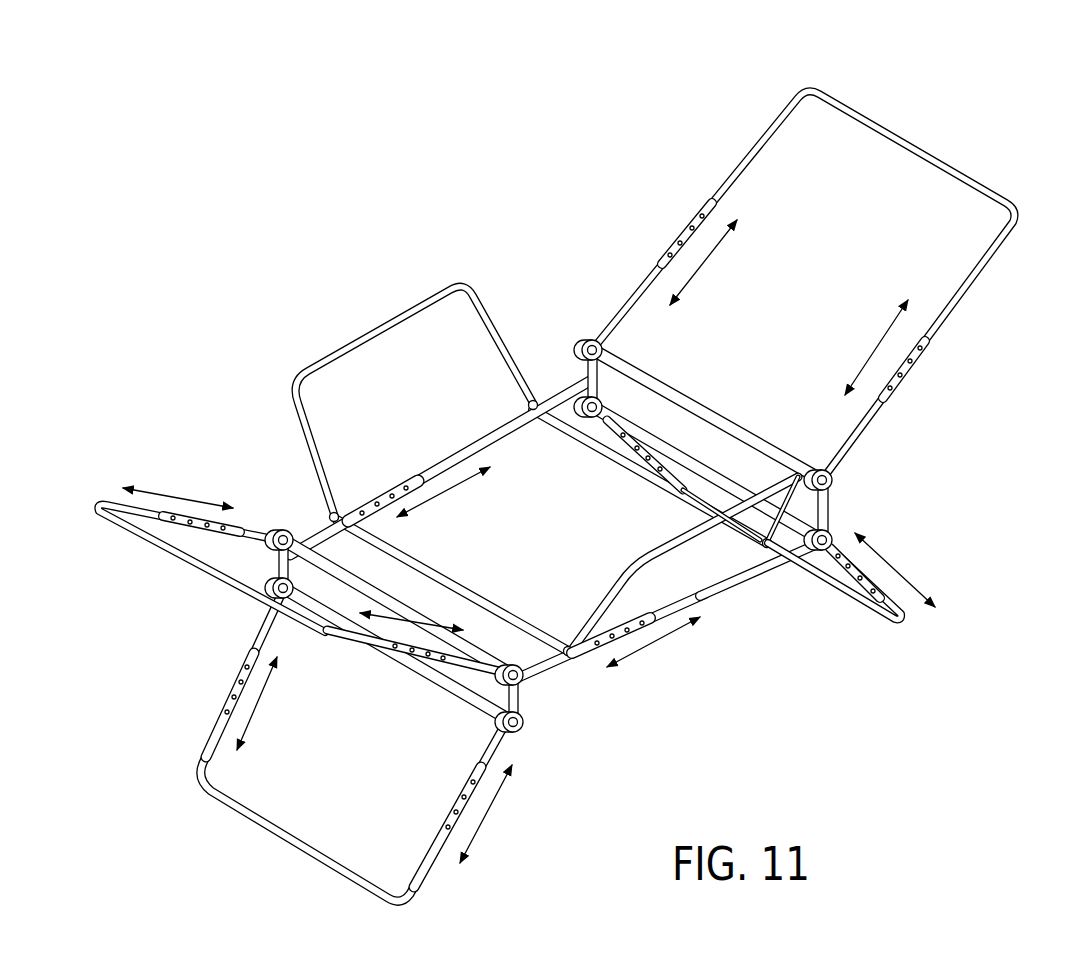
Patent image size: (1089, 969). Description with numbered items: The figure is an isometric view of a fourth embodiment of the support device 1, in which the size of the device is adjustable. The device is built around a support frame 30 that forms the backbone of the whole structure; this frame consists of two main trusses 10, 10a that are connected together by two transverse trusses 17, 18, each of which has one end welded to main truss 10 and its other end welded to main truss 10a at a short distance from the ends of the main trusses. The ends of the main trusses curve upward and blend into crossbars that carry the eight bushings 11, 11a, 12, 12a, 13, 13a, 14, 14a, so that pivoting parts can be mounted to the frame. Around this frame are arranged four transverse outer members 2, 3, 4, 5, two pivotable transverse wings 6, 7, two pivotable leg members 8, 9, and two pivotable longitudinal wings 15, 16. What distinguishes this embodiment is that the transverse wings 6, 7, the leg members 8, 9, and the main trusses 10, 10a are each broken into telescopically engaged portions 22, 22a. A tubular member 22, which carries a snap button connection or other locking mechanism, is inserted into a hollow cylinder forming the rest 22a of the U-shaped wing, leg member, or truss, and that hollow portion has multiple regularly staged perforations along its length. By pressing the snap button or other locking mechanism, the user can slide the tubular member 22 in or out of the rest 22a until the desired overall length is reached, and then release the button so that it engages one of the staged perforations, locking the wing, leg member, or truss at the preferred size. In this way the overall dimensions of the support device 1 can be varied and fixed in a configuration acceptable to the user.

The support device 1 is at (572, 478).
The transverse outer member 2 is at (344, 594).
The transverse outer member 3 is at (684, 385).
The transverse outer member 4 is at (460, 703).
The transverse outer member 5 is at (722, 462).
The pivotable transverse wing 6 is at (134, 548).
The pivotable transverse wing 7 is at (967, 156).
The pivotable leg member 8 is at (346, 882).
The pivotable leg member 9 is at (876, 636).
The main truss 10 is at (590, 668).
The main truss 10a is at (453, 443).
The bushing 11 is at (588, 341).
The bushing 11a is at (834, 479).
The bushing 12 is at (281, 528).
The bushing 12a is at (525, 692).
The bushing 13 is at (590, 397).
The bushing 13a is at (834, 532).
The bushing 14 is at (257, 586).
The bushing 14a is at (522, 737).
The pivotable longitudinal wing 15 is at (705, 546).
The pivotable longitudinal wing 16 is at (376, 313).
The transverse truss 17 is at (580, 459).
The transverse truss 18 is at (505, 615).
The tubular member 22 is at (677, 222).
The rest of the U-shaped wing member or truss 22a is at (593, 534).
The support frame 30 is at (752, 573).